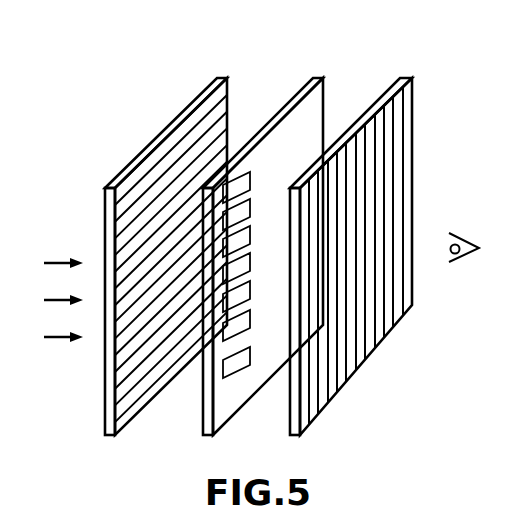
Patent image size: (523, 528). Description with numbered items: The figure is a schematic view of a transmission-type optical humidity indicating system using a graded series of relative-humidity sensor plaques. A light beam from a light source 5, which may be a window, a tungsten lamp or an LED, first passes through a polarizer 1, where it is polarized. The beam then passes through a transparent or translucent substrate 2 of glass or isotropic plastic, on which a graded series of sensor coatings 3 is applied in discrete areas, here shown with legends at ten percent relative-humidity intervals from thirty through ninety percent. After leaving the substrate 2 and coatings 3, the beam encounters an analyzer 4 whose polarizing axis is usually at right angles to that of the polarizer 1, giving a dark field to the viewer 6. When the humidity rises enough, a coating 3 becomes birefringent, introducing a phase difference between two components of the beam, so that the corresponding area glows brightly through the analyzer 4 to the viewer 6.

The polarizer 1 is at (222, 78).
The substrate 2 is at (320, 77).
The sensor layer 3 is at (259, 339).
The analyzer 4 is at (410, 78).
The light source 5 is at (44, 263).
The viewer 6 is at (469, 255).